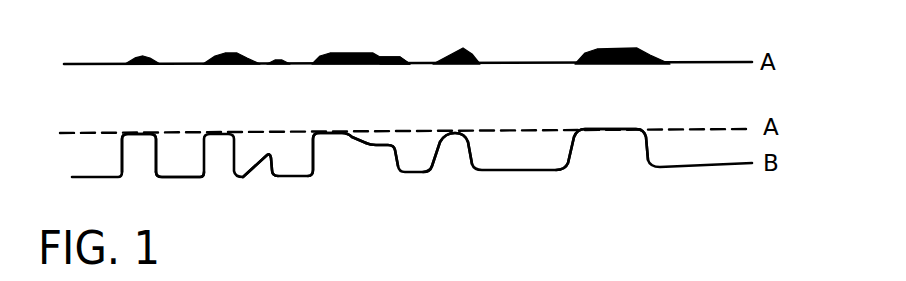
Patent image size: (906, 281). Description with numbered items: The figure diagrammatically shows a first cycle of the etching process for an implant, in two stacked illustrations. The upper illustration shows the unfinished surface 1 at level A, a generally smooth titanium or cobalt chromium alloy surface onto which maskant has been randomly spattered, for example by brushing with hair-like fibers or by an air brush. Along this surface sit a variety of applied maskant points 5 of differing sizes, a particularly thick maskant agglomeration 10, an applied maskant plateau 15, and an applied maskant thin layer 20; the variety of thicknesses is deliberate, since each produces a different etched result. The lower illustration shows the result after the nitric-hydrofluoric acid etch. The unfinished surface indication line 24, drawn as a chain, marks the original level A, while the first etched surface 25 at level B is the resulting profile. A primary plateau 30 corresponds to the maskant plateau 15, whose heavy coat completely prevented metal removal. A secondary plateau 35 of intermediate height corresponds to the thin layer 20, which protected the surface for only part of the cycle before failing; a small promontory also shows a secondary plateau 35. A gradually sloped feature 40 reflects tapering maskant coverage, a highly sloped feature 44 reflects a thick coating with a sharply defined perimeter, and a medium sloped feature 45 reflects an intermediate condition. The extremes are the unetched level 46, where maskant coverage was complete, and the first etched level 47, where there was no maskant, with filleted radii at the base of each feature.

The unfinished surface 1 is at (707, 62).
The applied maskant points 5 is at (148, 61).
The thick maskant agglomeration 10 is at (468, 48).
The applied maskant plateau 15 is at (357, 51).
The applied maskant thin layer 20 is at (397, 57).
The unfinished surface indication line 24 is at (708, 128).
The first etched surface 25 is at (707, 168).
The primary plateau 30 is at (342, 133).
The secondary plateau 35 is at (270, 153).
The gradually sloped feature 40 is at (437, 155).
The highly sloped feature 44 is at (316, 153).
The medium sloped feature 45 is at (578, 148).
The unetched level 46 is at (137, 132).
The first etched level 47 is at (178, 178).